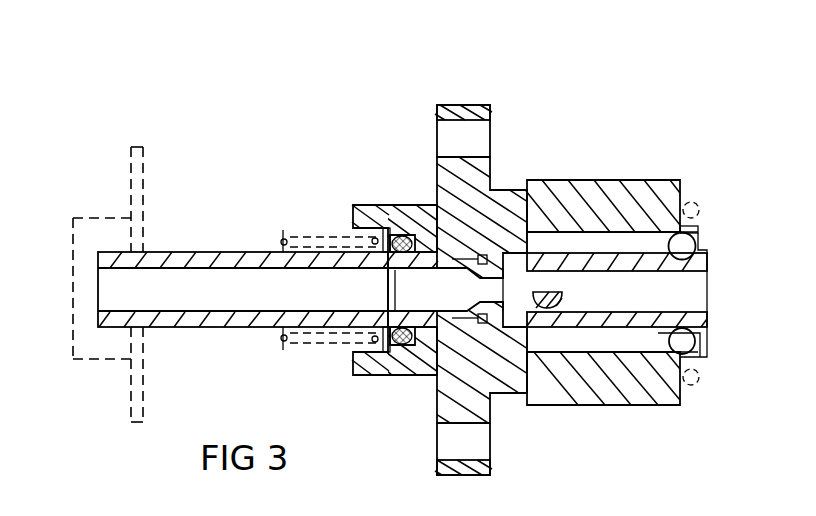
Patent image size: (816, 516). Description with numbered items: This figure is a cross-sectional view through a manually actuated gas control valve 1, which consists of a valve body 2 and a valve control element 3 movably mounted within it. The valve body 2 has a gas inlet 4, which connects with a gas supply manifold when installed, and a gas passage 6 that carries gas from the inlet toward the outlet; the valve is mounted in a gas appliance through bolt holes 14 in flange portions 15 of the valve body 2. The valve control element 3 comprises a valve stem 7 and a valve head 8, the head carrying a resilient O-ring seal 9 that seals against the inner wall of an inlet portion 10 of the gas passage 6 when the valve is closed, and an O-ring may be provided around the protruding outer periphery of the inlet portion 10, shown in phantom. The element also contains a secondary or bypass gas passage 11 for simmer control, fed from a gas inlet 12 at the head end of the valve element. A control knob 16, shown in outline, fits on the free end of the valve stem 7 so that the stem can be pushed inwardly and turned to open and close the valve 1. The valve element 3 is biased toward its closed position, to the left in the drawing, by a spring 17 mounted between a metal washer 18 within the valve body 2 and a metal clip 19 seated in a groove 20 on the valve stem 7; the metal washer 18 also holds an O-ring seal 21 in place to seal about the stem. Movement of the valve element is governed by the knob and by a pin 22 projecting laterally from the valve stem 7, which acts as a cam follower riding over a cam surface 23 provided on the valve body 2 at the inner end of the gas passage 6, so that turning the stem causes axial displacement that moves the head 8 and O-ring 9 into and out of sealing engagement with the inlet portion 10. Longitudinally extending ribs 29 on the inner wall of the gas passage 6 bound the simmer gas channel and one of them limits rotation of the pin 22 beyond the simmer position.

The manually actuated gas control valve 1 is at (333, 143).
The valve body 2 is at (604, 193).
The valve control element 3 is at (248, 338).
The gas inlet 4 is at (708, 240).
The gas passage 6 is at (631, 338).
The valve stem 7 is at (187, 223).
The valve head 8 is at (692, 262).
The resilient O-ring seal 9 is at (688, 343).
The inlet portion 10 is at (699, 222).
The bypass gas passage 11 is at (671, 305).
The gas inlet 12 is at (696, 291).
The bolt holes 14 is at (474, 132).
The flange portions 15 is at (450, 67).
The control knob 16 is at (113, 218).
The spring 17 is at (320, 236).
The metal washer 18 is at (397, 238).
The metal clip 19 is at (279, 233).
The groove 20 is at (277, 329).
The O-ring seal 21 is at (402, 348).
The pin 22 is at (557, 296).
The cam surface 23 is at (535, 337).
The ribs 29 is at (485, 322).